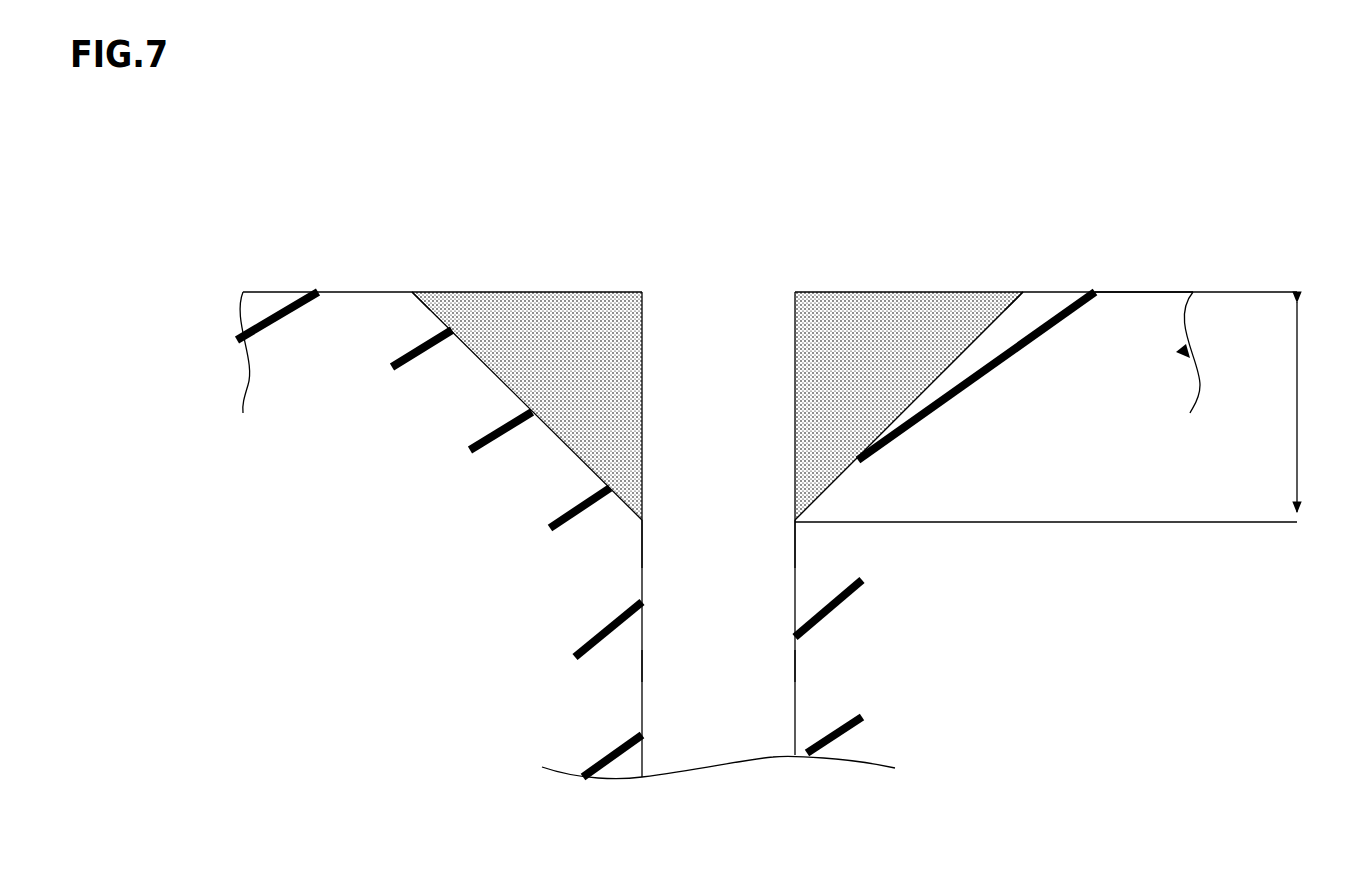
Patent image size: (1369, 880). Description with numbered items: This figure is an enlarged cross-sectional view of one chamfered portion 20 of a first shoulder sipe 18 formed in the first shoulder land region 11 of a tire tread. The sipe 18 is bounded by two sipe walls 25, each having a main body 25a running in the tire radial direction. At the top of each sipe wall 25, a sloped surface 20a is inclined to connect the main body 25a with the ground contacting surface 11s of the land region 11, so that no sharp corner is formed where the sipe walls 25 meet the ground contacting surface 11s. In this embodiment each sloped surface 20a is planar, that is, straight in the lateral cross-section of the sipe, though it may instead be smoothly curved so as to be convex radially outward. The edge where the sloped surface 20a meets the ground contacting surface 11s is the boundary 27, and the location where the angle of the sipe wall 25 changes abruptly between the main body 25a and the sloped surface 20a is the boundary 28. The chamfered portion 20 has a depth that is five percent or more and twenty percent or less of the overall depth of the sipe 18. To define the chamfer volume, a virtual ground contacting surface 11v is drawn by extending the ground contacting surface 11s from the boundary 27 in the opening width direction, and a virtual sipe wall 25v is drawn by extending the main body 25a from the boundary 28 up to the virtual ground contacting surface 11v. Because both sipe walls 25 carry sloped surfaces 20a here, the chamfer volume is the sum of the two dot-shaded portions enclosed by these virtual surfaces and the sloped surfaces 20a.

The first shoulder land region 11 is at (1147, 267).
The ground contacting surface 11s is at (1070, 292).
The virtual ground contacting surface 11v is at (565, 292).
The first shoulder sipe 18 is at (715, 332).
The chamfered portion 20 is at (523, 252).
The sloped surface 20a is at (483, 358).
The sipe wall 25 is at (642, 712).
The main body 25a is at (642, 650).
The virtual sipe wall 25v is at (643, 367).
The boundary 27 is at (412, 292).
The boundary 28 is at (642, 520).